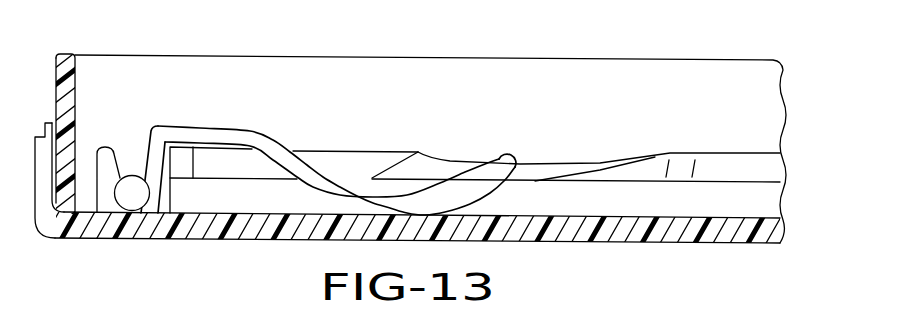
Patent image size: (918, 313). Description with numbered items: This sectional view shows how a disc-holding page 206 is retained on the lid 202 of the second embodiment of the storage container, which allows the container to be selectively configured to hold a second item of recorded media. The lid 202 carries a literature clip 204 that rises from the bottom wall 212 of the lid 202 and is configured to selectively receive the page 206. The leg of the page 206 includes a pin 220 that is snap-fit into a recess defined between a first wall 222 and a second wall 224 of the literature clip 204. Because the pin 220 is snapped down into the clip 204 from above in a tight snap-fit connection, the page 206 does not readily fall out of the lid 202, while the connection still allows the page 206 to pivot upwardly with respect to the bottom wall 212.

The lid 202 is at (548, 96).
The literature clip 204 is at (255, 138).
The disc-holding page 206 is at (724, 157).
The bottom wall 212 is at (678, 241).
The pin 220 is at (128, 202).
The first wall 222 is at (102, 185).
The second wall 224 is at (160, 188).